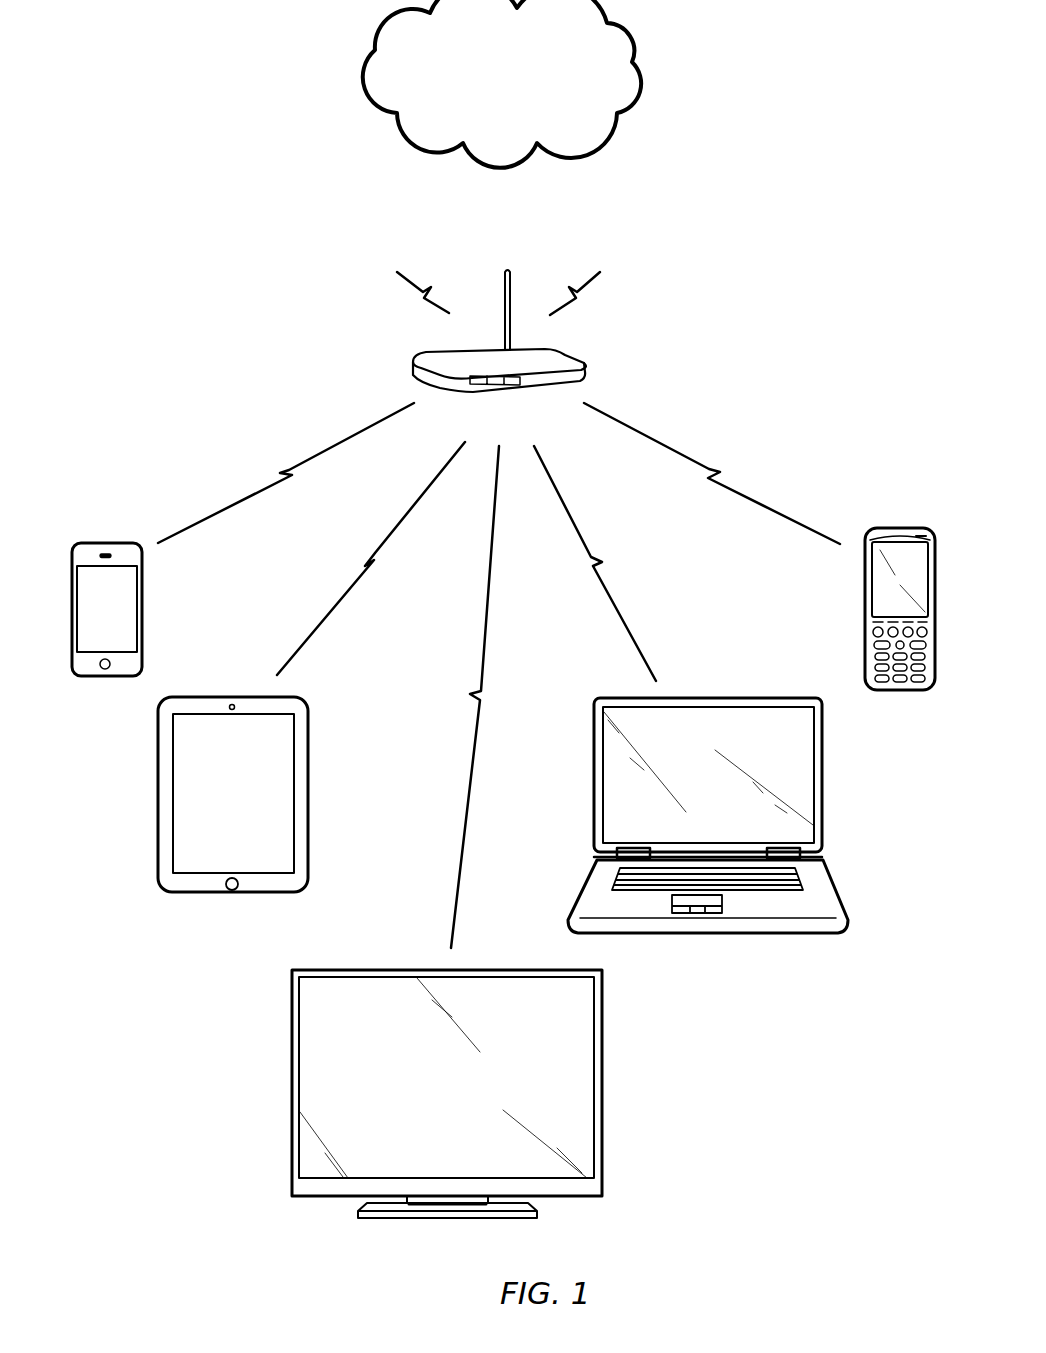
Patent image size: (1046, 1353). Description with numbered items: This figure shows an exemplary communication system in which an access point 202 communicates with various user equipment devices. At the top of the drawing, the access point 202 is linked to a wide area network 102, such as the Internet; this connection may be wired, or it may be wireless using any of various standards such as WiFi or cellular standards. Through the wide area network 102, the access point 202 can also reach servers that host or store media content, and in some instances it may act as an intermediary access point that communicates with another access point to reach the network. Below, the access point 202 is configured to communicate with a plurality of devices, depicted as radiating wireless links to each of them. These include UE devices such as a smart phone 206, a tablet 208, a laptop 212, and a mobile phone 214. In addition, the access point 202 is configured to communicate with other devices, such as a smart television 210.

The wide area network 102 is at (491, 97).
The access point 202 is at (422, 356).
The smart phone 206 is at (100, 543).
The tablet 208 is at (221, 697).
The smart television 210 is at (368, 970).
The laptop 212 is at (743, 698).
The mobile phone 214 is at (904, 528).